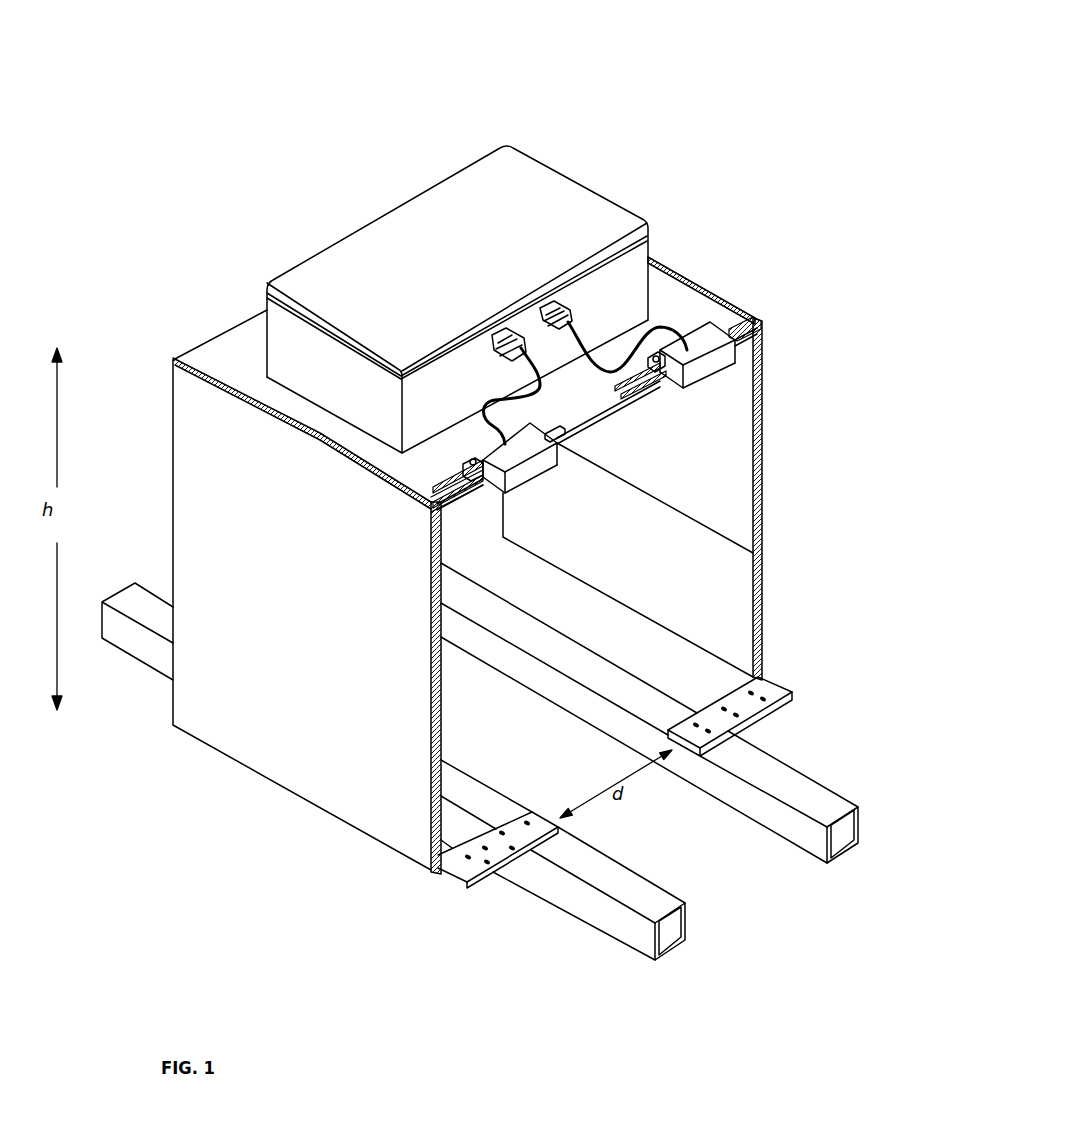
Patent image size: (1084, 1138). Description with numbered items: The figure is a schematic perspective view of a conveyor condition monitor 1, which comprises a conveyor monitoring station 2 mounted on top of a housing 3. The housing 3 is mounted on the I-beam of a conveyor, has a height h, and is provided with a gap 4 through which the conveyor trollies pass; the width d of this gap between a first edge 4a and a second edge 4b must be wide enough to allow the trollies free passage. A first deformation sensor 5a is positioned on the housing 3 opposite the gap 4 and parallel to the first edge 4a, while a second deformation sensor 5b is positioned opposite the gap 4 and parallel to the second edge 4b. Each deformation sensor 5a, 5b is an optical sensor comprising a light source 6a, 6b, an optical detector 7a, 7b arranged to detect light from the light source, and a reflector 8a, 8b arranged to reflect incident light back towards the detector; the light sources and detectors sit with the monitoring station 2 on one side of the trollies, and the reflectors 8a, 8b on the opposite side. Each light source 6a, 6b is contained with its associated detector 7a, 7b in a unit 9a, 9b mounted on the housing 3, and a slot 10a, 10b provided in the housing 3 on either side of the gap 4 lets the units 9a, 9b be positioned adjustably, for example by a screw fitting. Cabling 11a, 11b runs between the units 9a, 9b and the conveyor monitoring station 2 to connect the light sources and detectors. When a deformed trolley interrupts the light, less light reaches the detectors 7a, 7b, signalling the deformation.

The conveyor condition monitor 1 is at (590, 120).
The conveyor monitoring station 2 is at (410, 226).
The housing 3 is at (760, 447).
The gap 4 is at (480, 761).
The first edge 4a is at (513, 800).
The second edge 4b is at (665, 743).
The first deformation sensor 5a is at (485, 525).
The second deformation sensor 5b is at (752, 339).
The light source 6a is at (492, 493).
The light source 6b is at (720, 370).
The optical detector 7a is at (537, 468).
The optical detector 7b is at (705, 382).
The reflector 8a is at (498, 850).
The reflector 8b is at (777, 680).
The unit 9a is at (513, 452).
The unit 9b is at (697, 343).
The slot 10a is at (437, 495).
The slot 10b is at (742, 327).
The cabling 11a is at (513, 397).
The cabling 11b is at (617, 367).